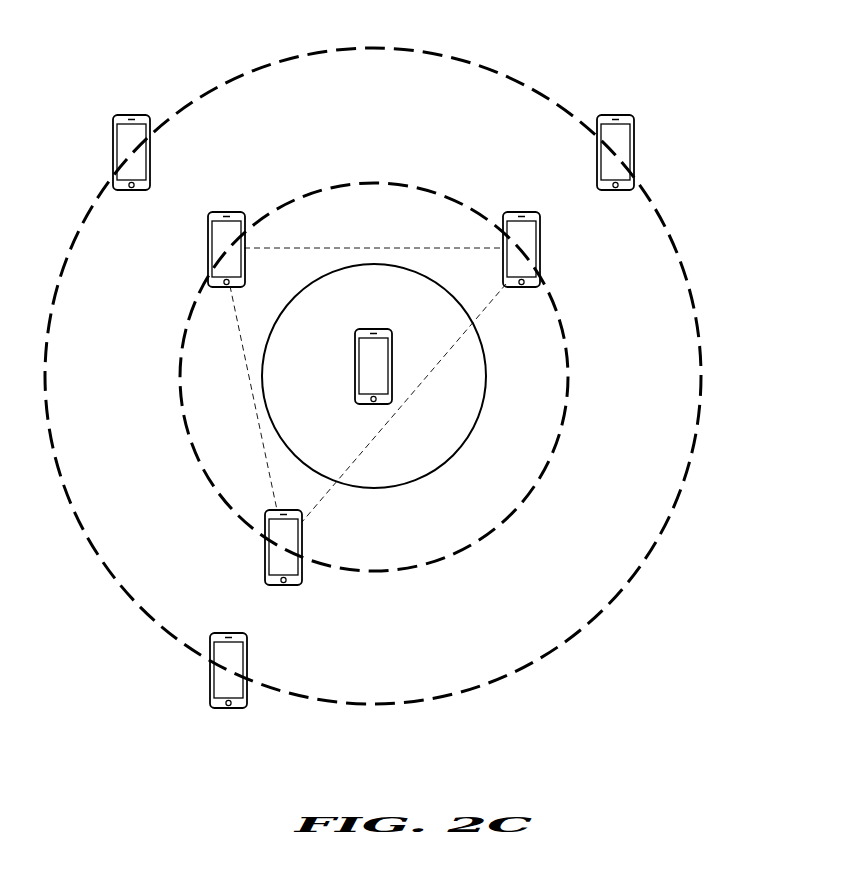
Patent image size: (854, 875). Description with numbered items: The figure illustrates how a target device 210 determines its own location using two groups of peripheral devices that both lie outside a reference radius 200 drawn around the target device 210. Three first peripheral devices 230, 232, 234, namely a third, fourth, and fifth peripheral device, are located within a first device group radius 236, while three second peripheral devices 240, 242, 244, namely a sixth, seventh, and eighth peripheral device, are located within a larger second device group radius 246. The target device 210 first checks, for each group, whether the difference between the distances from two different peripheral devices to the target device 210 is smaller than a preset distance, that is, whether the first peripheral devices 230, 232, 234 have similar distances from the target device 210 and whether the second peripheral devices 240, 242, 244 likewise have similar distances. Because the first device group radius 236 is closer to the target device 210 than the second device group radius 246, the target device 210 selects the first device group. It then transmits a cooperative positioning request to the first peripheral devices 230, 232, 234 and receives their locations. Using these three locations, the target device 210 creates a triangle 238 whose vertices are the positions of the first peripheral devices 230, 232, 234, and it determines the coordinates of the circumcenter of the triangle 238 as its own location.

The reference radius 200 is at (487, 389).
The target device 210 is at (364, 330).
The third peripheral device 230 is at (208, 248).
The fourth peripheral device 232 is at (540, 248).
The fifth peripheral device 234 is at (265, 562).
The first device group radius 236 is at (566, 330).
The triangle 238 is at (346, 246).
The sixth peripheral device 240 is at (113, 152).
The seventh peripheral device 242 is at (634, 152).
The eighth peripheral device 244 is at (210, 684).
The second device group radius 246 is at (497, 70).